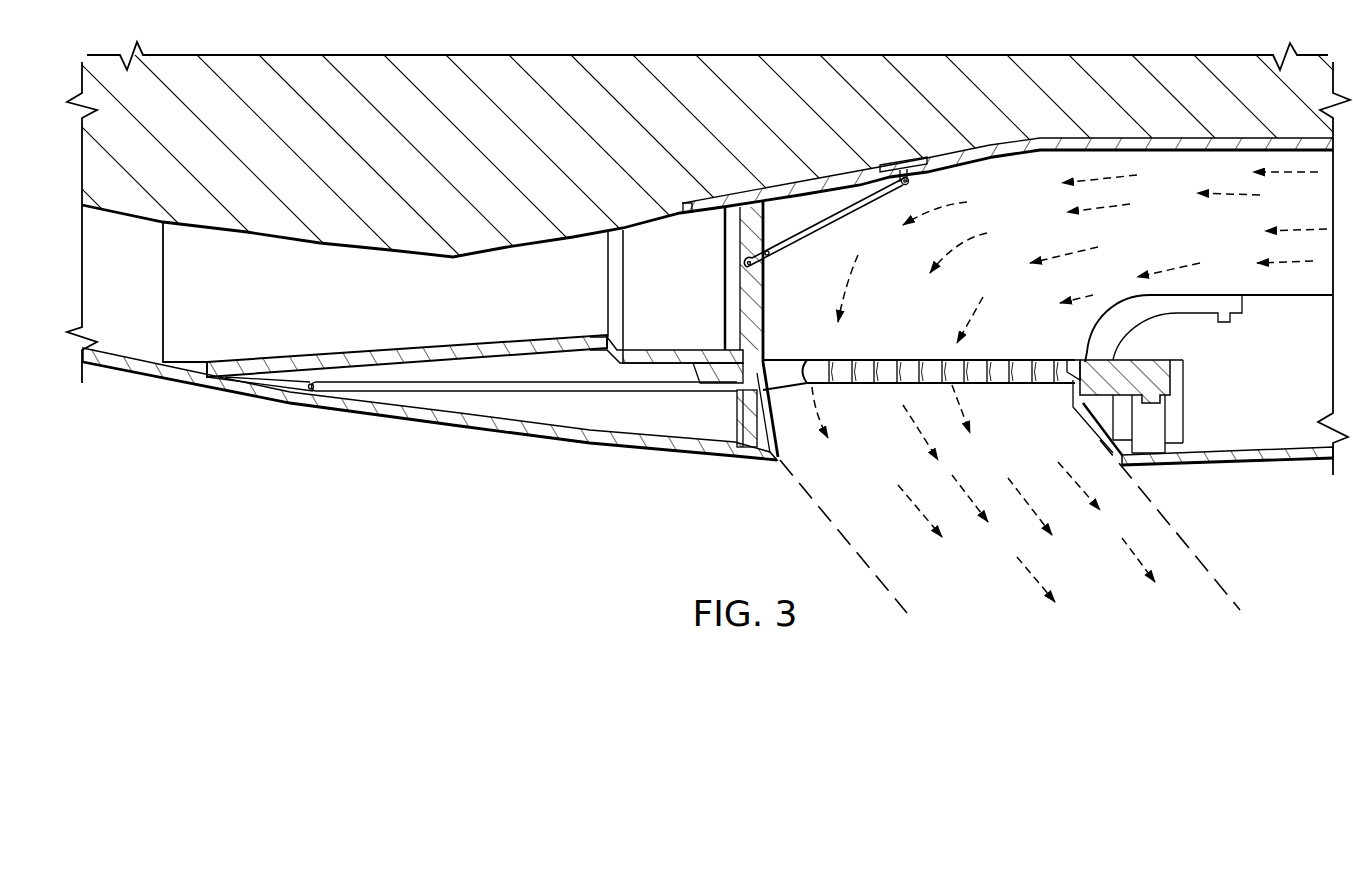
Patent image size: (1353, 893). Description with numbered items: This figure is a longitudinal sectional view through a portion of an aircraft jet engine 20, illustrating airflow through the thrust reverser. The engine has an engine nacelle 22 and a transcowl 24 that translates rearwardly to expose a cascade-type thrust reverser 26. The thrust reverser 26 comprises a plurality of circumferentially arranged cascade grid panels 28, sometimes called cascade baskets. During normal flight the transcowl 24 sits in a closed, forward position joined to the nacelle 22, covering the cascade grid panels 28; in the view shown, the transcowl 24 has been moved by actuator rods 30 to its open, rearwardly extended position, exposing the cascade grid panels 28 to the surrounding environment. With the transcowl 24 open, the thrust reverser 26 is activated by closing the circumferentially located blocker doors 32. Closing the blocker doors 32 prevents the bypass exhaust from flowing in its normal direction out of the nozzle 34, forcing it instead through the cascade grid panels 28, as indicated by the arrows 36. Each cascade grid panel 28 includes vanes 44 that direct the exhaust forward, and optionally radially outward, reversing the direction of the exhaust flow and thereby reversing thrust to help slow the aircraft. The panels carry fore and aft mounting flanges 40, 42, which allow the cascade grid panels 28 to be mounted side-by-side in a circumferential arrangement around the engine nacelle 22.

The aircraft jet engine 20 is at (418, 55).
The engine nacelle 22 is at (1227, 463).
The transcowl 24 is at (170, 378).
The cascade-type thrust reverser 26 is at (980, 590).
The cascade grid panels 28 is at (877, 418).
The actuator rods 30 is at (450, 400).
The blocker doors 32 is at (740, 256).
The nozzle 34 is at (199, 306).
The arrows 36 is at (918, 510).
The fore mounting flange 40 is at (1110, 372).
The aft mounting flange 42 is at (733, 398).
The vanes 44 is at (1008, 384).